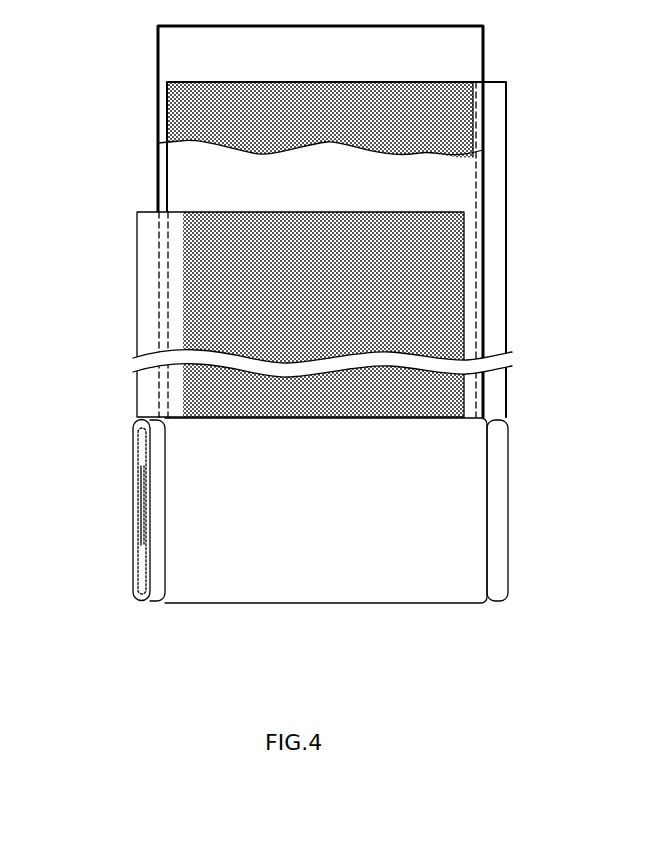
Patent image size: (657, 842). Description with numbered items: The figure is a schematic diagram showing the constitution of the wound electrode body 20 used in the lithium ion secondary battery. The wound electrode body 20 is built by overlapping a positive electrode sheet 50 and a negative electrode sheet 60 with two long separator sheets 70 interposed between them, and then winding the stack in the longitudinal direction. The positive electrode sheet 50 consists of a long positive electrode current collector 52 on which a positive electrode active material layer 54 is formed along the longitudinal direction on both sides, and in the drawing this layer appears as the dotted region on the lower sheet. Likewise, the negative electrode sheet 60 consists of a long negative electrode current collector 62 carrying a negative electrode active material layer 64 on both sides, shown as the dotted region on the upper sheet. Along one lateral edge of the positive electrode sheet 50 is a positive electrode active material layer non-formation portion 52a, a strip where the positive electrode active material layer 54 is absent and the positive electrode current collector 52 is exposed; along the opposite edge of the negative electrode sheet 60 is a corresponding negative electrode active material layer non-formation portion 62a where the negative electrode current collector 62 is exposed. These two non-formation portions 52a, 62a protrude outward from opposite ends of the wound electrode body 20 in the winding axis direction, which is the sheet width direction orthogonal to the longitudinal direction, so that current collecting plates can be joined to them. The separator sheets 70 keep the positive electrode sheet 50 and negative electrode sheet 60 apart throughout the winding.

The wound electrode body 20 is at (405, 581).
The positive electrode sheet 50 is at (239, 406).
The positive electrode current collector 52 is at (137, 345).
The positive electrode active material layer non-formation portion 52a is at (148, 316).
The positive electrode active material layer 54 is at (197, 229).
The negative electrode sheet 60 is at (390, 341).
The negative electrode current collector 62 is at (394, 341).
The negative electrode active material layer non-formation portion 62a is at (495, 205).
The negative electrode active material layer 64 is at (473, 107).
The separator sheet 70 is at (176, 56).